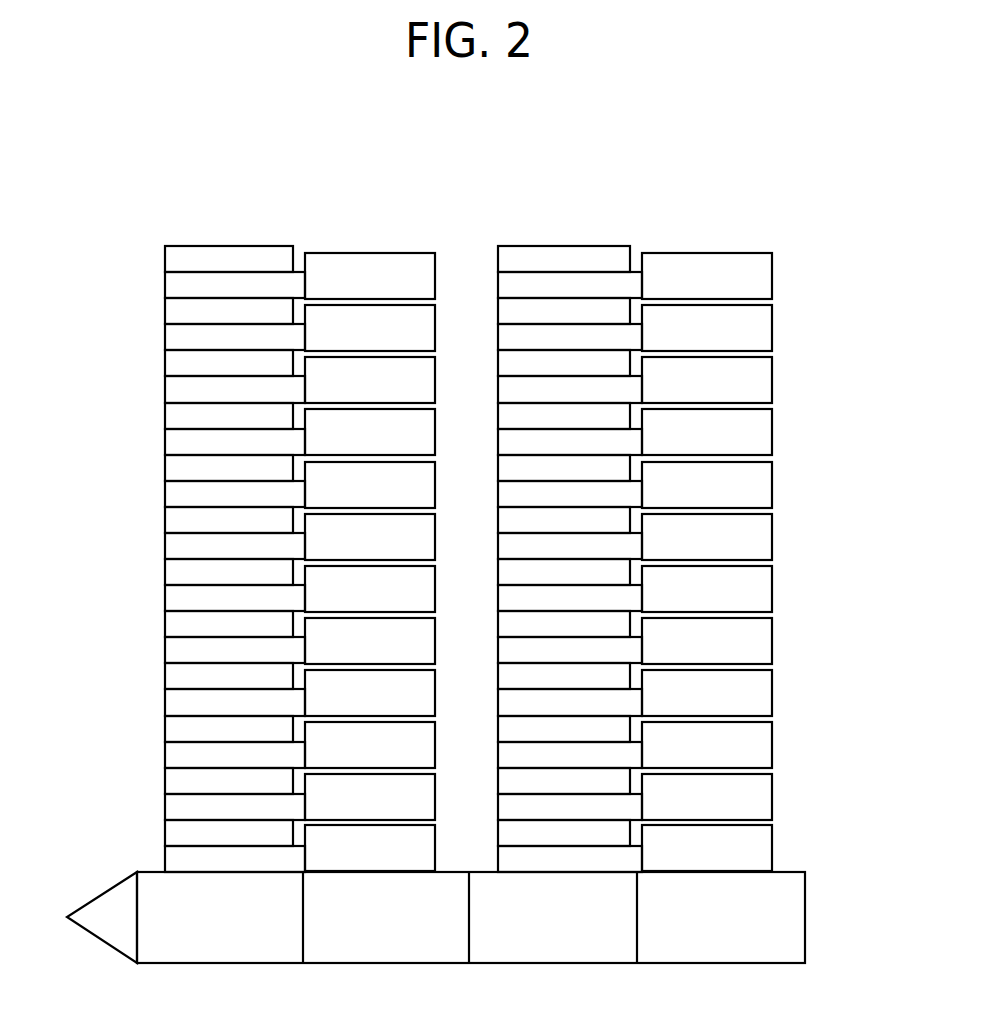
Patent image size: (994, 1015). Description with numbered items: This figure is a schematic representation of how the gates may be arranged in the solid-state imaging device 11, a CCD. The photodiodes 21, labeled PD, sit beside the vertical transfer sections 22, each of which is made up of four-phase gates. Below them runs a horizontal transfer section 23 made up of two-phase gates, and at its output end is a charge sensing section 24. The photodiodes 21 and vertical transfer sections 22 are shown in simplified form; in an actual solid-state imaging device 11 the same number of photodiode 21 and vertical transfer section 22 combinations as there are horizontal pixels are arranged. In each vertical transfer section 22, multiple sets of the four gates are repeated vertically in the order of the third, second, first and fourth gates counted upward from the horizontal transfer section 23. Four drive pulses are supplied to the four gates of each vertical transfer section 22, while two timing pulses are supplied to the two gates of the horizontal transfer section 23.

The solid-state imaging device 11 is at (848, 201).
The photodiodes 21 is at (373, 252).
The vertical transfer sections 22 is at (163, 728).
The horizontal transfer section 23 is at (805, 927).
The charge sensing section 24 is at (93, 933).